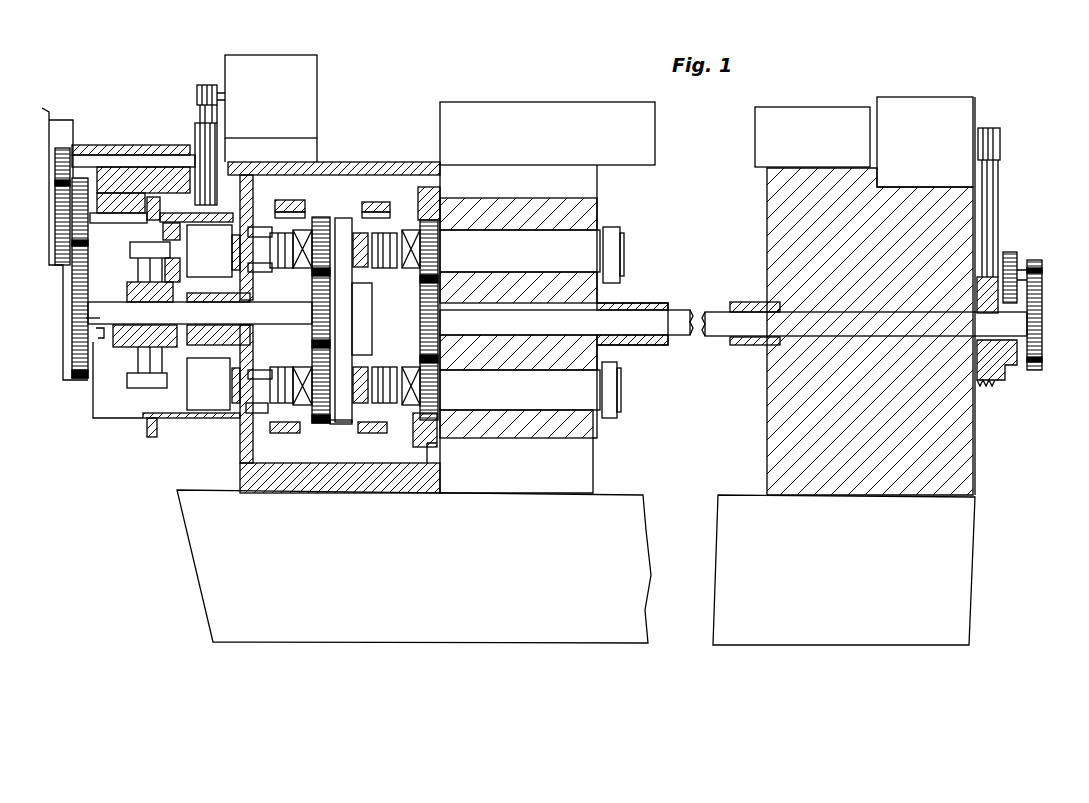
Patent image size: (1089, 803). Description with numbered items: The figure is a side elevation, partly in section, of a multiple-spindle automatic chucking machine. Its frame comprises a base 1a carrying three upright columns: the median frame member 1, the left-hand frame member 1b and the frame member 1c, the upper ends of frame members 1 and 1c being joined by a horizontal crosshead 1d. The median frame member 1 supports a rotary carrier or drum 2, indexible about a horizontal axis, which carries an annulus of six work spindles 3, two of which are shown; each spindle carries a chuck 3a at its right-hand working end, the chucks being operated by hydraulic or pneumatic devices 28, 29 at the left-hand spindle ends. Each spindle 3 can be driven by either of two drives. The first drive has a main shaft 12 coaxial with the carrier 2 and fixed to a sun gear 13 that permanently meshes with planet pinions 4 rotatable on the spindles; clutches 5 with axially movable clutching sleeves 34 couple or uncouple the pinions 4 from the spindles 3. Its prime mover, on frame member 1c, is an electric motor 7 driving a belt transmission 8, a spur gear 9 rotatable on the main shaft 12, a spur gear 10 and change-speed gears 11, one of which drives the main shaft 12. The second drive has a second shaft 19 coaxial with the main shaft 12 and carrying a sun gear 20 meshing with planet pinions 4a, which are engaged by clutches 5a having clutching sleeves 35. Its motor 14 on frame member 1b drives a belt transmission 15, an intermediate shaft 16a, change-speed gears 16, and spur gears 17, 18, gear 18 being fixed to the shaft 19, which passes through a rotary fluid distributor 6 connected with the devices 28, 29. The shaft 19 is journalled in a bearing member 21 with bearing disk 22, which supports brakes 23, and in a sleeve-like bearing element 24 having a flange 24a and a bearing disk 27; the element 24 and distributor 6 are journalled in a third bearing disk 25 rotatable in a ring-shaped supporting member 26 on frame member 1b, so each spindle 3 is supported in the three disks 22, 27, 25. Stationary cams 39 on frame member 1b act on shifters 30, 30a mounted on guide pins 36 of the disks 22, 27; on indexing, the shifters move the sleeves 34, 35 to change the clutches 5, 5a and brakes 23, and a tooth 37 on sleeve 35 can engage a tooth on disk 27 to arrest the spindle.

The median frame member 1 is at (590, 472).
The base 1a is at (720, 595).
The left-hand frame member 1b is at (307, 148).
The frame member 1c is at (967, 447).
The horizontal crosshead 1d is at (655, 133).
The rotary carrier or drum 2 is at (593, 427).
The work spindle 3 is at (587, 240).
The chuck 3a is at (615, 243).
The planet pinion 4 is at (427, 187).
The second planet pinion 4a is at (342, 340).
The clutch 5 is at (437, 438).
The second clutch 5a is at (317, 413).
The rotary fluid distributor 6 is at (78, 373).
The electric motor 7 is at (975, 107).
The belt transmission 8 is at (995, 200).
The spur gear 9 is at (1008, 358).
The spur gear 10 is at (1012, 250).
The change-speed gears 11 is at (1042, 277).
The main shaft 12 is at (793, 323).
The sun gear 13 is at (440, 340).
The electric motor 14 is at (310, 90).
The belt transmission 15 is at (200, 113).
The change-speed gears 16 is at (60, 190).
The intermediate shaft 16a is at (113, 160).
The spur gear 17 is at (82, 240).
The spur gear 18 is at (78, 300).
The second shaft 19 is at (100, 320).
The sun gear 20 is at (322, 310).
The bearing member 21 is at (380, 262).
The bearing disk 22 is at (345, 420).
The brake 23 is at (360, 267).
The sleeve-like bearing element 24 is at (227, 293).
The flange 24a is at (310, 333).
The third bearing disk 25 is at (147, 425).
The ring-shaped supporting member 26 is at (193, 417).
The bearing disk 27 is at (230, 418).
The fluid-operated device 28 is at (177, 417).
The fluid-operated device 29 is at (127, 388).
The shifter 30 is at (390, 217).
The shifter 30a is at (305, 405).
The clutching sleeve 34 is at (440, 253).
The clutching sleeve 35 is at (273, 225).
The guide pin 36 is at (358, 225).
The tooth 37 is at (257, 410).
The stationary cam 39 is at (363, 203).